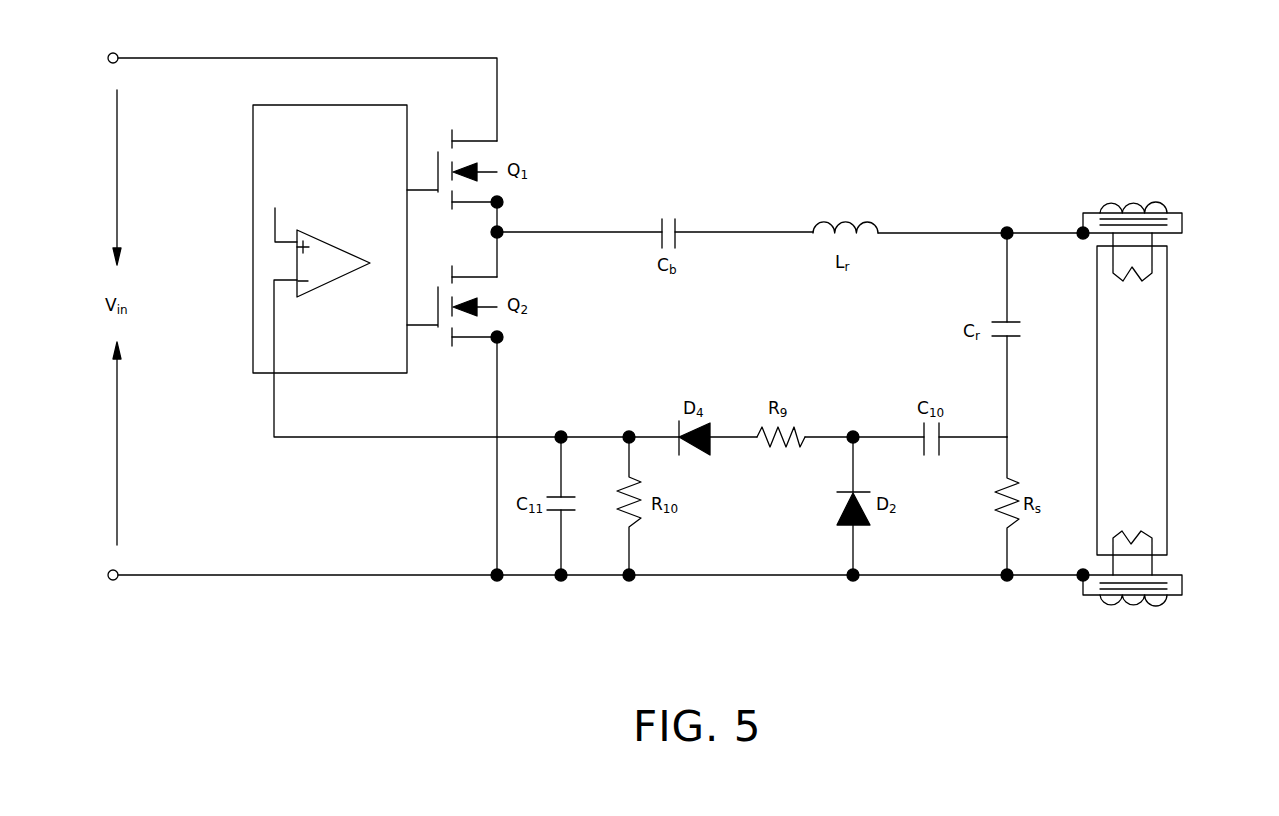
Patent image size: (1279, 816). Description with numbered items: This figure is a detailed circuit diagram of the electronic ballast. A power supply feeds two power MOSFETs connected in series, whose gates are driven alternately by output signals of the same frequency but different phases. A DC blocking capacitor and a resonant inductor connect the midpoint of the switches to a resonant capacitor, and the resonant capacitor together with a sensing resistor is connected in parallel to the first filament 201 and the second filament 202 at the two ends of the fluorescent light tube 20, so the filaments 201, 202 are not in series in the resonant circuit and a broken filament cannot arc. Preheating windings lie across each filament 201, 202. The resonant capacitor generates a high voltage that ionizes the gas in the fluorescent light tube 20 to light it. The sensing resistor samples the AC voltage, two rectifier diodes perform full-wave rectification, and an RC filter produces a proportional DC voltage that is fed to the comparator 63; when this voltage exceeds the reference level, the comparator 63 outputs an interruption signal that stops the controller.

The comparator 63 is at (328, 272).
The fluorescent light tube 20 is at (1167, 408).
The first filament 201 is at (1143, 258).
The second filament 202 is at (1143, 547).